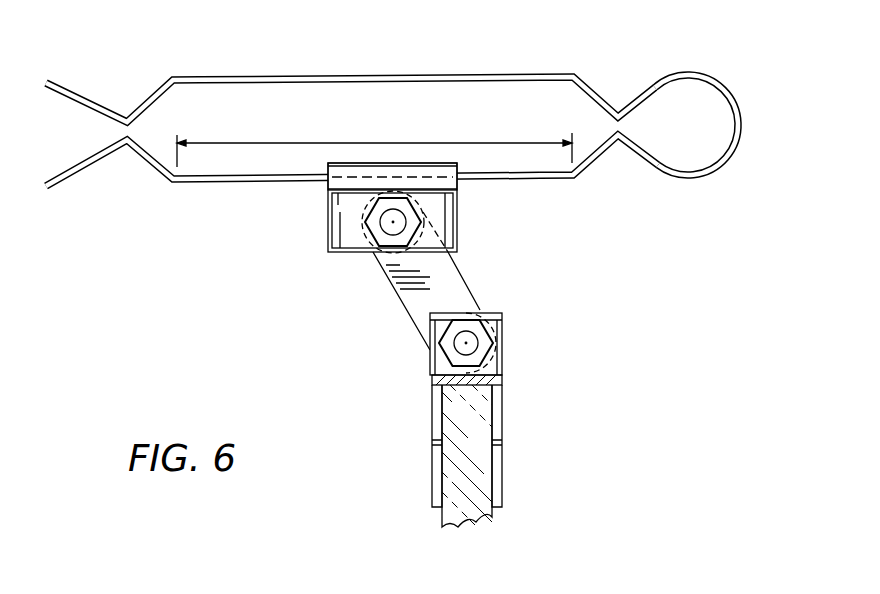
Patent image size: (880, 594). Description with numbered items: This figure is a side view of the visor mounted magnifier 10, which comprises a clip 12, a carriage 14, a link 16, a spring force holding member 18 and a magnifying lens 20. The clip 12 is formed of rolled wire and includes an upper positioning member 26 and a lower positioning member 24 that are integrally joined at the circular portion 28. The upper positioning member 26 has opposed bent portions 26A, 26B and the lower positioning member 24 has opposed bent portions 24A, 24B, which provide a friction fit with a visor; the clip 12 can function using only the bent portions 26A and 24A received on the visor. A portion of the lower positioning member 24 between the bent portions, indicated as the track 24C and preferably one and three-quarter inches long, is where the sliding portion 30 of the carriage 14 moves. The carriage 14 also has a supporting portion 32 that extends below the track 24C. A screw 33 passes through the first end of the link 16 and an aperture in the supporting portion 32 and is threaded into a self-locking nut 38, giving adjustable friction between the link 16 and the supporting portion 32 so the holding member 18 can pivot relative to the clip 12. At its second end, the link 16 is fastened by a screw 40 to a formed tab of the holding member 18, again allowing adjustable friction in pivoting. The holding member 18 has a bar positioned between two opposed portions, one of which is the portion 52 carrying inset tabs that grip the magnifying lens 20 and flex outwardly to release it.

The visor mounted magnifier 10 is at (713, 62).
The clip 12 is at (416, 139).
The carriage 14 is at (340, 209).
The link 16 is at (463, 280).
The spring force holding member 18 is at (504, 343).
The magnifying lens 20 is at (453, 467).
The lower positioning member 24 is at (220, 184).
The bent portion 24A is at (127, 143).
The bent portion 24B is at (620, 140).
The track 24C is at (352, 139).
The upper positioning member 26 is at (278, 80).
The bent portion 26A is at (128, 121).
The bent portion 26B is at (620, 115).
The circular portion 28 is at (739, 142).
The sliding portion 30 is at (393, 214).
The supporting portion 32 is at (352, 228).
The screw 33 is at (391, 232).
The self-locking nut 38 is at (407, 223).
The screw 40 is at (473, 340).
The opposed portion 52 is at (500, 418).